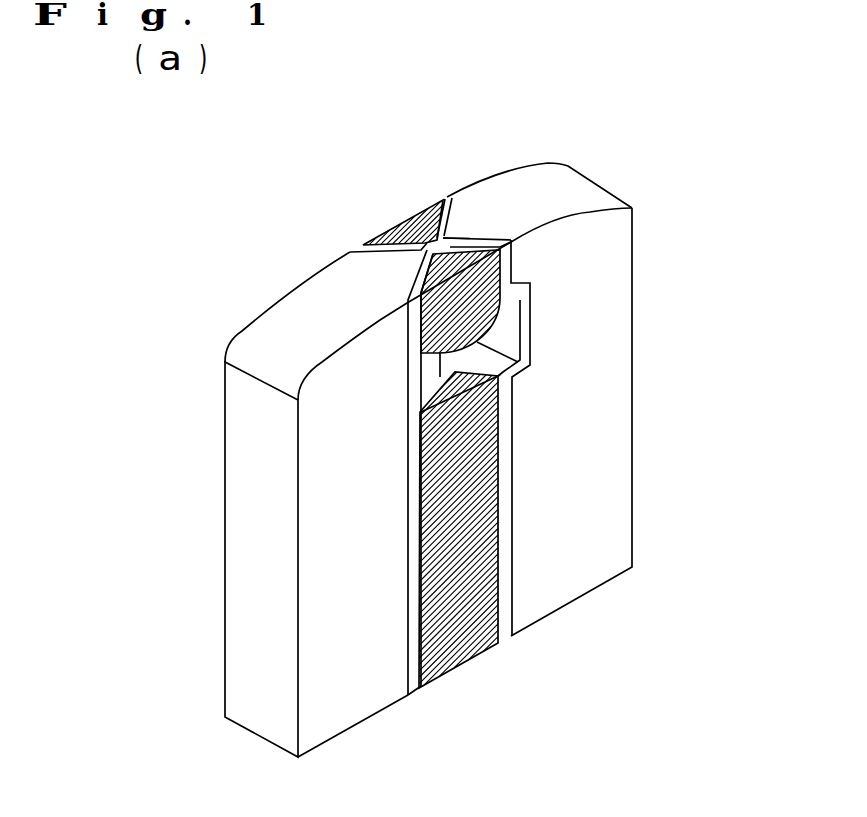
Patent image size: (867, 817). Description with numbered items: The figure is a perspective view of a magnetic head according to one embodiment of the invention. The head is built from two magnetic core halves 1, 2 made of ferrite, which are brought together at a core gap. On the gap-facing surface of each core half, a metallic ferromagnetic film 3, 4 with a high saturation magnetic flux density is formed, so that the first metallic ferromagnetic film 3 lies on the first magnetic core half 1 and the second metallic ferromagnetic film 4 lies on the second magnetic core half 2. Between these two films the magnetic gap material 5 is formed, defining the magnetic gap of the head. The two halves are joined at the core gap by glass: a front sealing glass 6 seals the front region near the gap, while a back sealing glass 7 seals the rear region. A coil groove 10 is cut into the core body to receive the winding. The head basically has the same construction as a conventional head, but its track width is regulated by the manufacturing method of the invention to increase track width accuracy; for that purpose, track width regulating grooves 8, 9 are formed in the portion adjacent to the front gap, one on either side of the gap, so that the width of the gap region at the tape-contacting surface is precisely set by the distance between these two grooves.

The magnetic core half 1 is at (255, 553).
The magnetic core half 2 is at (583, 485).
The metallic ferromagnetic film 3 is at (410, 658).
The metallic ferromagnetic film 4 is at (448, 198).
The magnetic gap material 5 is at (447, 238).
The front sealing glass 6 is at (468, 290).
The back sealing glass 7 is at (453, 630).
The track width regulating groove 8 is at (420, 240).
The track width regulating groove 9 is at (513, 250).
The coil groove 10 is at (505, 328).